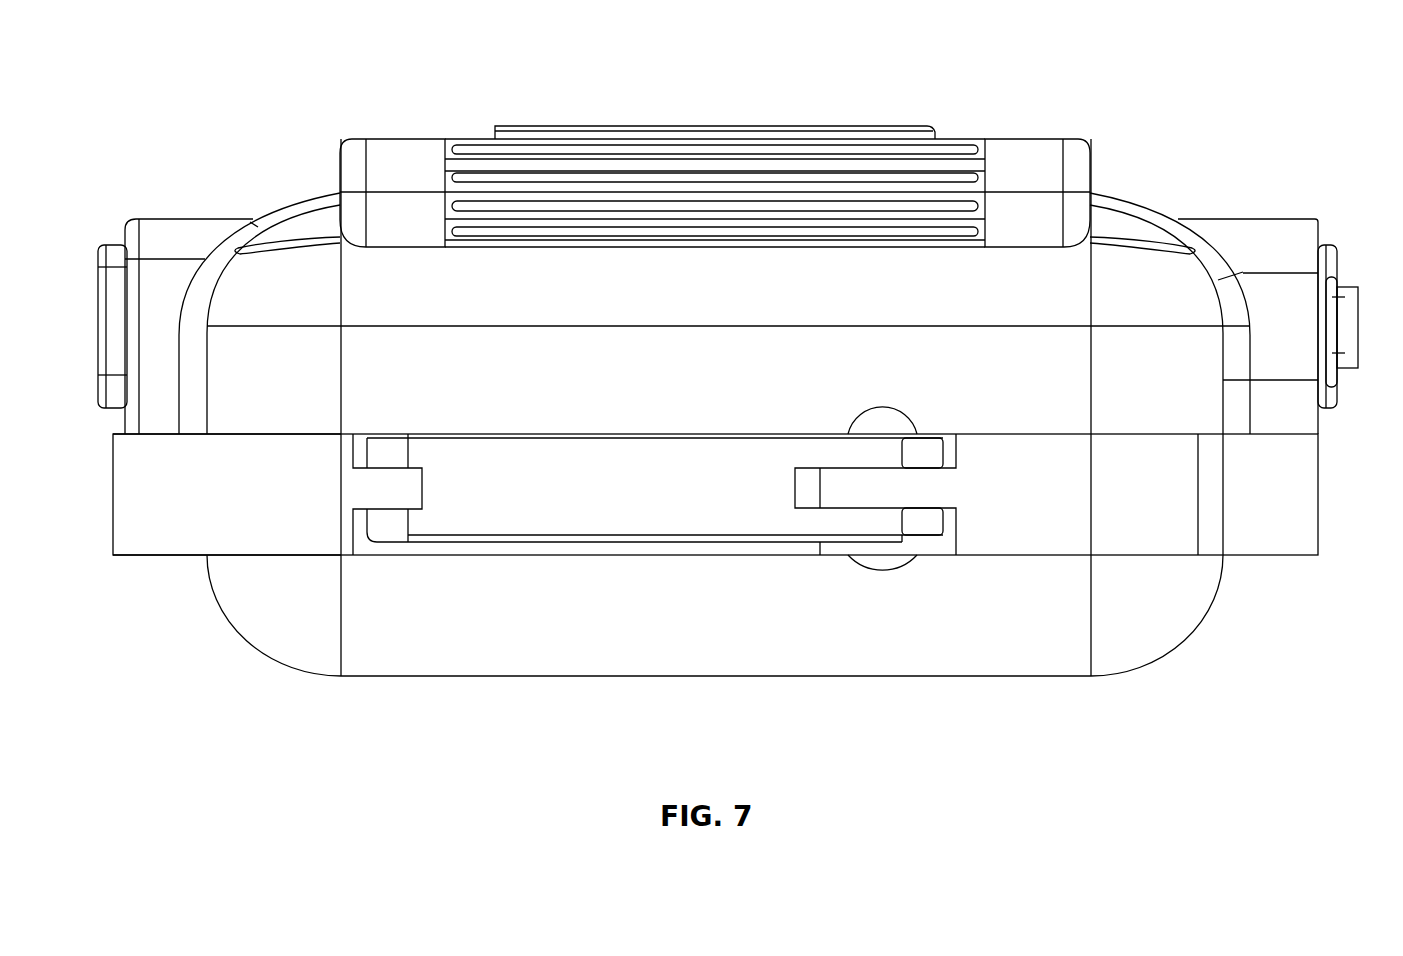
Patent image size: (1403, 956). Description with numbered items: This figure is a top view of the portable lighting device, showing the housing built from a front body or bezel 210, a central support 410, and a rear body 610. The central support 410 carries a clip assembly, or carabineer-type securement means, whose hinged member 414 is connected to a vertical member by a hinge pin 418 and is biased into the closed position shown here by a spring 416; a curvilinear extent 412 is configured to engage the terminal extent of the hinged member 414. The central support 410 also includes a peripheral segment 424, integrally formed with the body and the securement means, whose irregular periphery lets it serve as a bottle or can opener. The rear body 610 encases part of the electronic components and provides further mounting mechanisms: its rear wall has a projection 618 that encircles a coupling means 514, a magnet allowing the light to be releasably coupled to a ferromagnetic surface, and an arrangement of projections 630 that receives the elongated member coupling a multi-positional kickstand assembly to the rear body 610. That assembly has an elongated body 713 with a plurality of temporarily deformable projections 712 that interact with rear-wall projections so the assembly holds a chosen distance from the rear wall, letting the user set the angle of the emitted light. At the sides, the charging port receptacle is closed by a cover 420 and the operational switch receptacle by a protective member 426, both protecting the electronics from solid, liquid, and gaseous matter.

The coupling means 514 is at (660, 80).
The arrangement of projections 630 is at (402, 157).
The projection 618 is at (808, 137).
The plurality of projections 712 is at (715, 132).
The elongated body 713 is at (888, 165).
The rear body 610 is at (1035, 372).
The protective member 426 is at (118, 312).
The cover 420 is at (1348, 296).
The central support 410 is at (155, 507).
The curvilinear extent 412 is at (305, 533).
The hinged member 414 is at (529, 503).
The spring 416 is at (690, 503).
The hinge pin 418 is at (885, 550).
The front body or bezel 210 is at (985, 625).
The peripheral segment 424 is at (1205, 518).